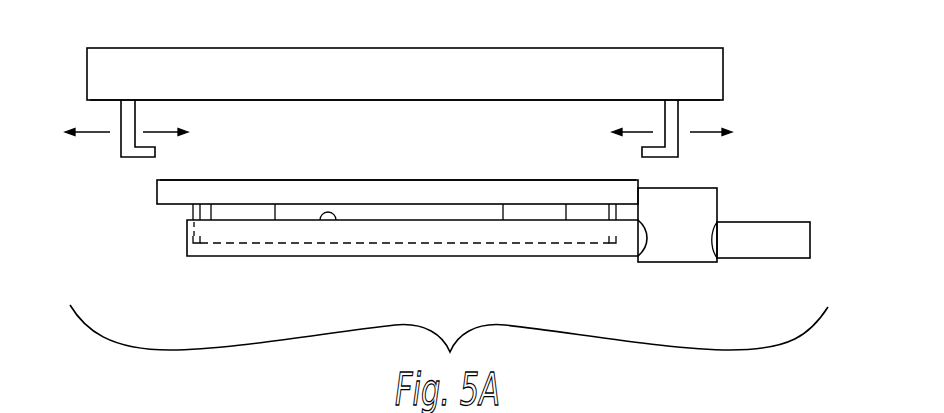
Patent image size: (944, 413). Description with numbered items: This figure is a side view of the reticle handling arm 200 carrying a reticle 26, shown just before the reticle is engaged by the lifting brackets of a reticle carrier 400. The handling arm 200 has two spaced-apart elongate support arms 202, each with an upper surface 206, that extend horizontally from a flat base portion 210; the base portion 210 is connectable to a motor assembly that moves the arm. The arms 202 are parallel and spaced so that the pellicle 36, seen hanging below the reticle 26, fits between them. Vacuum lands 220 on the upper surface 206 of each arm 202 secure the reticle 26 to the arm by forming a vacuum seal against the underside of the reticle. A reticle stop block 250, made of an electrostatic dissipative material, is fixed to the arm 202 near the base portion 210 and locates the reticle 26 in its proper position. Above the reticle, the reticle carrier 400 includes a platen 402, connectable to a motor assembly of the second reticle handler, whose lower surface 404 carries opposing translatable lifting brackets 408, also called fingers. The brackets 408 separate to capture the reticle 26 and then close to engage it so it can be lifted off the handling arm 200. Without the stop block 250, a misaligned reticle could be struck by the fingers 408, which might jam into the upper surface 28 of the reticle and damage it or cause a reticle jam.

The reticle carrier 400 is at (406, 82).
The platen 402 is at (371, 60).
The lower surface 404 is at (433, 101).
The translatable lifting brackets 408 is at (121, 151).
The reticle handling arm 200 is at (496, 218).
The reticle 26 is at (297, 188).
The upper surface 28 is at (410, 182).
The vacuum lands 220 is at (247, 212).
The elongate support arms 202 is at (385, 249).
The upper surface 206 is at (338, 223).
The pellicle 36 is at (485, 246).
The reticle stop block 250 is at (688, 191).
The base portion 210 is at (800, 243).